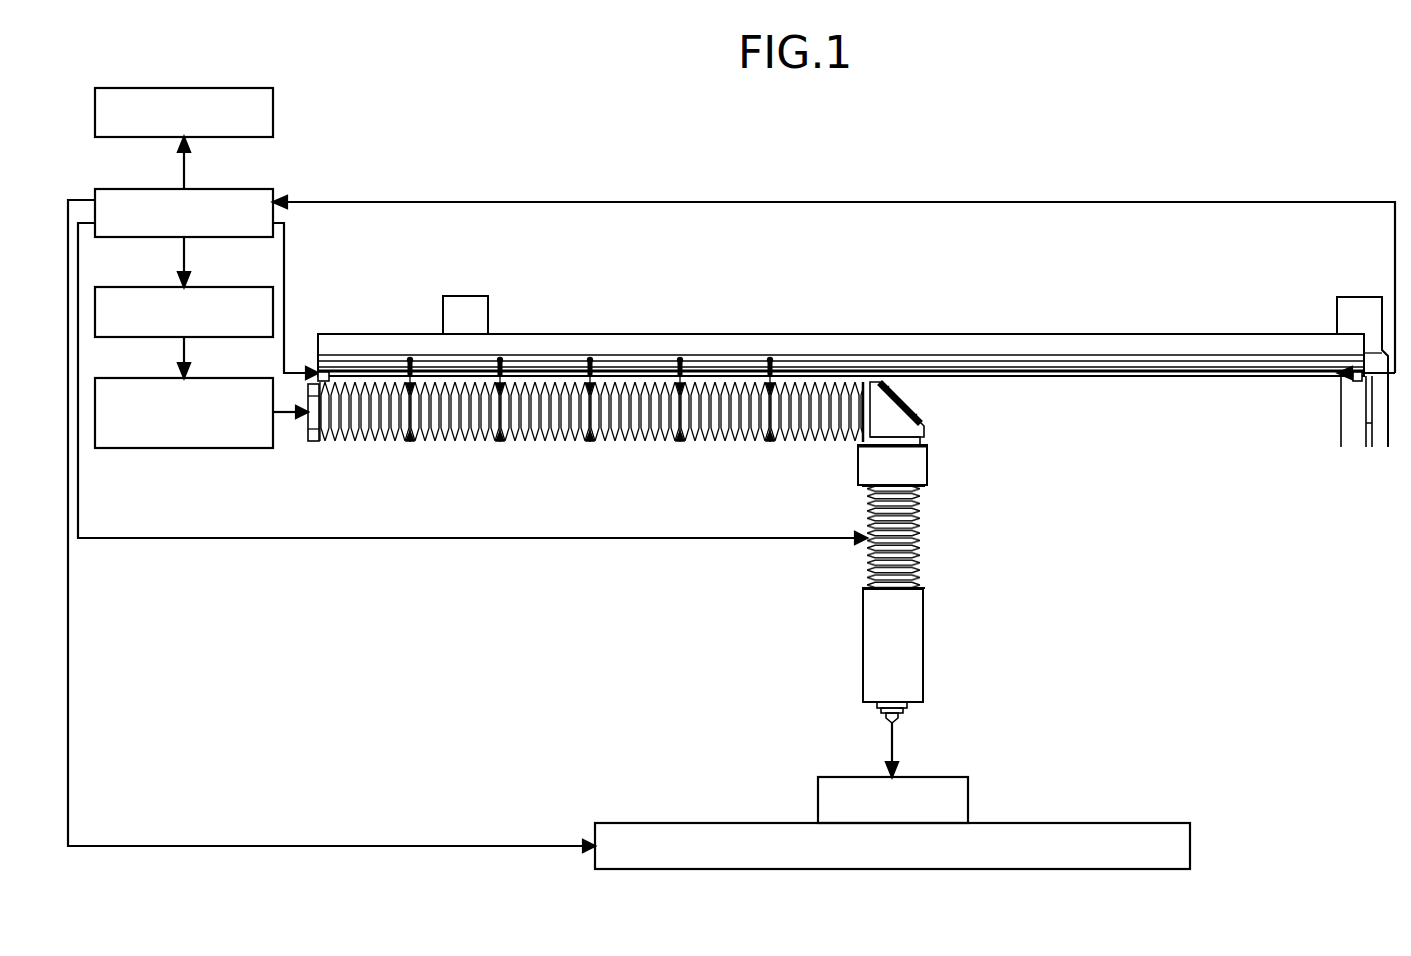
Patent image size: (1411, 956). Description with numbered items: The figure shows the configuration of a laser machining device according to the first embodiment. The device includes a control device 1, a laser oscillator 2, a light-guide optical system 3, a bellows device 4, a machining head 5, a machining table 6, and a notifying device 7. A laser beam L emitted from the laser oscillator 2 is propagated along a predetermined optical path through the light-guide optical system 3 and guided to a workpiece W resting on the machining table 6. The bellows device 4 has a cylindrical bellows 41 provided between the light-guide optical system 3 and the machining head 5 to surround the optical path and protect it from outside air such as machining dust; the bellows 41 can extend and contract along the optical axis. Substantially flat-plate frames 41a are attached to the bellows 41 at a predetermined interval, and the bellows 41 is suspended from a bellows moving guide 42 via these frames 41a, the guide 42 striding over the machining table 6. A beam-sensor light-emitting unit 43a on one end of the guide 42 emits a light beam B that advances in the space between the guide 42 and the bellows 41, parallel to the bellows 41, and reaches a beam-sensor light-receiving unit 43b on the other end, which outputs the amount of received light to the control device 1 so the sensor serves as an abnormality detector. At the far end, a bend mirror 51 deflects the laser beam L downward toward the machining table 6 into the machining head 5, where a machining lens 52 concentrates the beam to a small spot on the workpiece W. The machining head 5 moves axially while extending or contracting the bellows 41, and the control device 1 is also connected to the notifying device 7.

The control device 1 is at (218, 187).
The laser oscillator 2 is at (218, 286).
The light-guide optical system 3 is at (218, 376).
The bellows device 4 is at (849, 367).
The machining head 5 is at (909, 559).
The machining table 6 is at (1072, 823).
The notifying device 7 is at (218, 86).
The bellows 41 is at (585, 391).
The frame 41a is at (499, 386).
The bellows moving guide 42 is at (652, 346).
The beam-sensor light-emitting unit 43a is at (323, 369).
The beam-sensor light-receiving unit 43b is at (1352, 380).
The bend mirror 51 is at (906, 396).
The machining lens 52 is at (900, 715).
The light beam B is at (1134, 377).
The laser beam L is at (180, 353).
The workpiece W is at (969, 800).